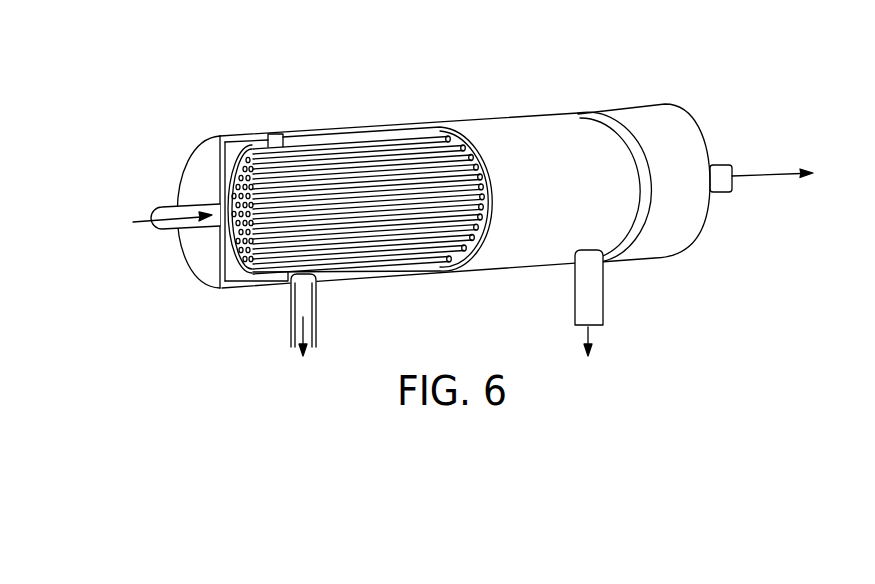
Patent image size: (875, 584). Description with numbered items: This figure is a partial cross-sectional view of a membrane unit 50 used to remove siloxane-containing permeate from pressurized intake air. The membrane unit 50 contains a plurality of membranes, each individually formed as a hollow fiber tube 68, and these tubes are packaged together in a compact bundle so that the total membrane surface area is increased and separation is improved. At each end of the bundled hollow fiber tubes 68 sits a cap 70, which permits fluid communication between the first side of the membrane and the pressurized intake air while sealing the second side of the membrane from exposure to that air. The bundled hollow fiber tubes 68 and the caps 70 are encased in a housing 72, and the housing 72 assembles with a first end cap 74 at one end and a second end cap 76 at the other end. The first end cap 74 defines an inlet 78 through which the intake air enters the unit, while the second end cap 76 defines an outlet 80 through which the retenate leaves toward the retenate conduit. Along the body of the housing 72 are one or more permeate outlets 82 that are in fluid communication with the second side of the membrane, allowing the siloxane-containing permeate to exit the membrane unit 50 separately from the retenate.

The membrane unit 50 is at (413, 68).
The hollow fiber tube 68 is at (341, 157).
The cap 70 is at (271, 142).
The housing 72 is at (502, 122).
The first end cap 74 is at (195, 152).
The second end cap 76 is at (682, 110).
The inlet 78 is at (176, 204).
The outlet 80 is at (716, 165).
The permeate outlet 82 is at (317, 319).